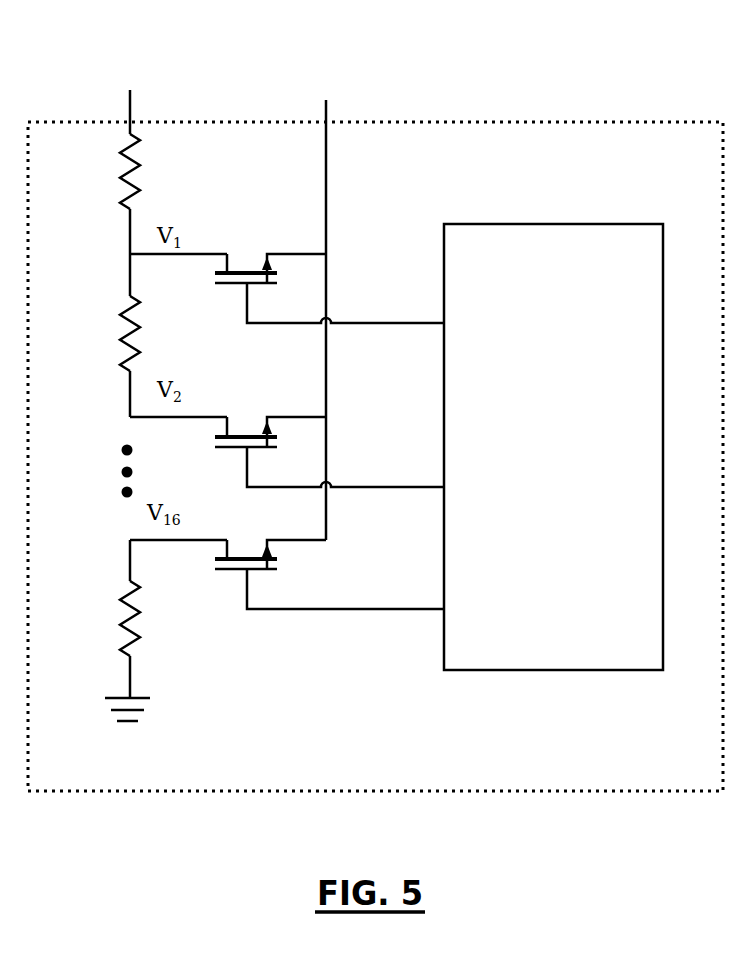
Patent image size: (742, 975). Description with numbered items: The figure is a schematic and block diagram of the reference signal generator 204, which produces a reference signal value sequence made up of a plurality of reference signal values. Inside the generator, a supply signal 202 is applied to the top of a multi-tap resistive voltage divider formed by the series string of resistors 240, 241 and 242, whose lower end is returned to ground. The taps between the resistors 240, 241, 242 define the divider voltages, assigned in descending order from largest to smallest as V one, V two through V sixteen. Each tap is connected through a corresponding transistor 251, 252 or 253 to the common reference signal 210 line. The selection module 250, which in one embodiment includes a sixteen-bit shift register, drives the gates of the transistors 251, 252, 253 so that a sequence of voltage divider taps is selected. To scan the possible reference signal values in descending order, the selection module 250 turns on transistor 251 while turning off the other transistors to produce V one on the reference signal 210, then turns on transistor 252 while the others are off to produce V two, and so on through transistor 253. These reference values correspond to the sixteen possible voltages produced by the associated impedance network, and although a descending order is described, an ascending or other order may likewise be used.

The supply signal 202 is at (130, 78).
The reference signal 210 is at (328, 281).
The reference signal generator 204 is at (552, 727).
The resistor 240 is at (104, 186).
The resistor 241 is at (103, 348).
The resistor 242 is at (102, 633).
The transistor 251 is at (314, 308).
The transistor 252 is at (314, 468).
The transistor 253 is at (314, 591).
The selection module 250 is at (553, 447).